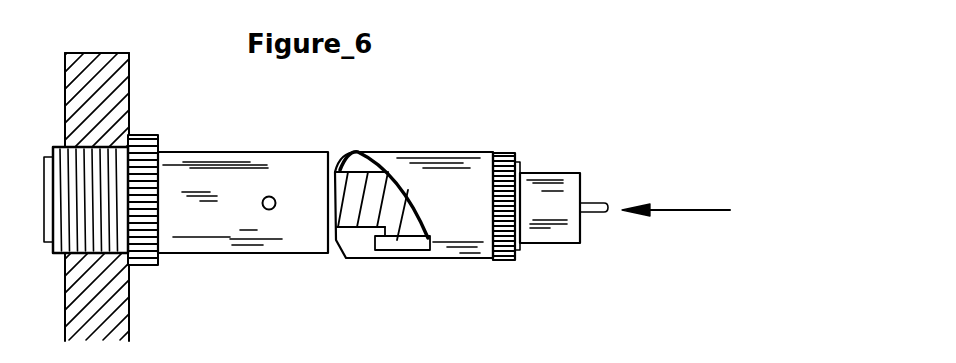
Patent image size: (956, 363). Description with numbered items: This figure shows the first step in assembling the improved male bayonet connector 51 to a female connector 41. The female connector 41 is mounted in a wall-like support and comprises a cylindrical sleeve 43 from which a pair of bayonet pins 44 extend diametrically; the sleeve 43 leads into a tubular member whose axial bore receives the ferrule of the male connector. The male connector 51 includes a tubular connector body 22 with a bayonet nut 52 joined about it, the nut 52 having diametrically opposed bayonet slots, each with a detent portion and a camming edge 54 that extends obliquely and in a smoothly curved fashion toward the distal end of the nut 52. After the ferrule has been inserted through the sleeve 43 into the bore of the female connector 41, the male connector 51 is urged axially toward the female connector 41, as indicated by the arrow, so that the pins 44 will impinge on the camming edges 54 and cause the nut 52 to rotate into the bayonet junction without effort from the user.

The connector body 22 is at (547, 210).
The female connector component 41 is at (200, 128).
The cylindrical sleeve 43 is at (215, 202).
The bayonet pins 44 is at (268, 210).
The male connector 51 is at (486, 126).
The bayonet nut 52 is at (472, 228).
The camming edge 54 is at (403, 182).